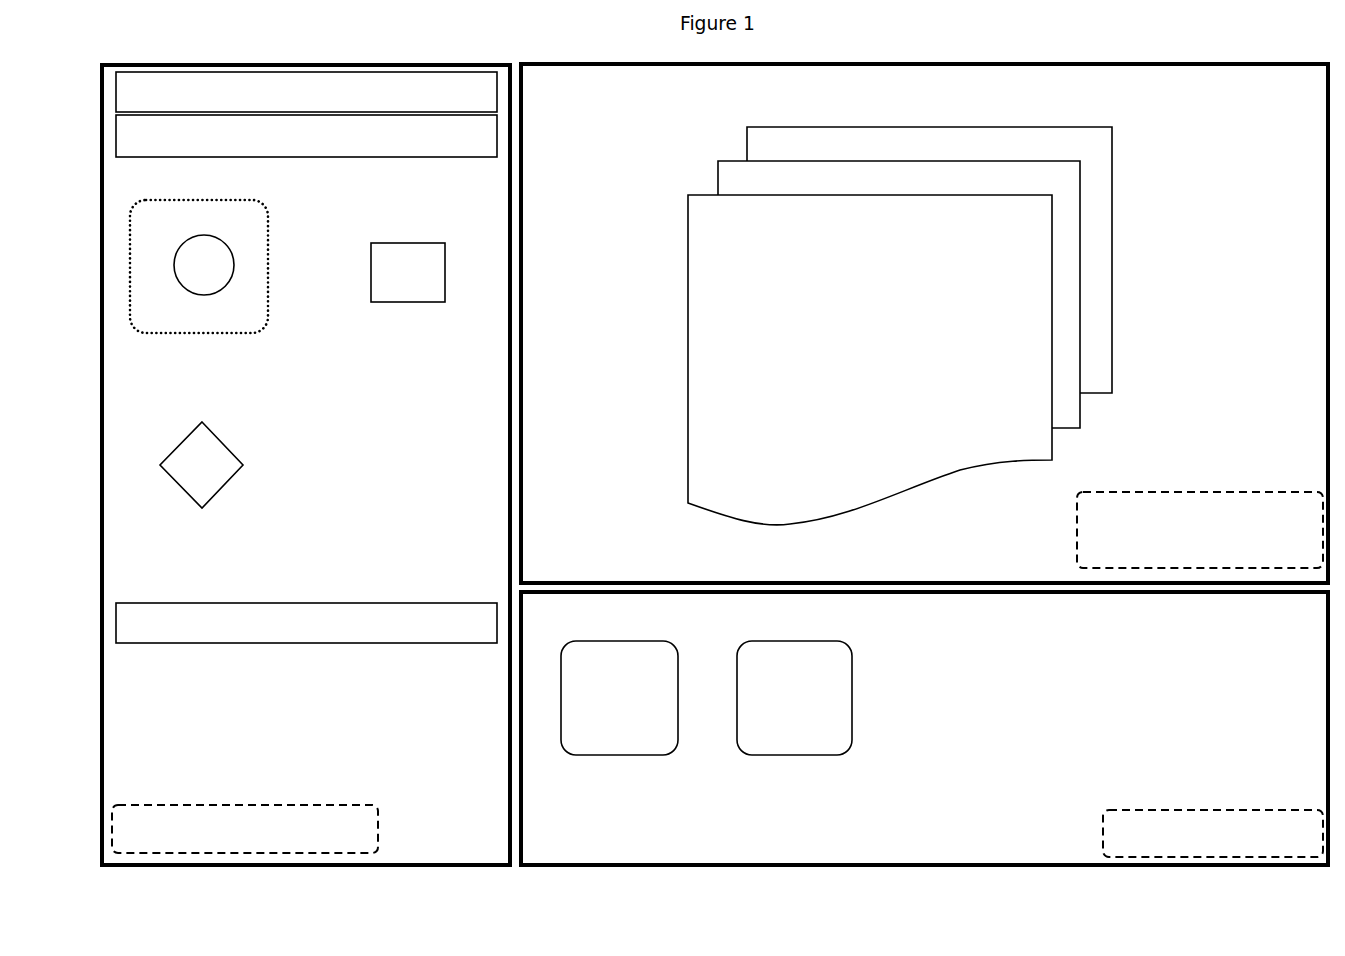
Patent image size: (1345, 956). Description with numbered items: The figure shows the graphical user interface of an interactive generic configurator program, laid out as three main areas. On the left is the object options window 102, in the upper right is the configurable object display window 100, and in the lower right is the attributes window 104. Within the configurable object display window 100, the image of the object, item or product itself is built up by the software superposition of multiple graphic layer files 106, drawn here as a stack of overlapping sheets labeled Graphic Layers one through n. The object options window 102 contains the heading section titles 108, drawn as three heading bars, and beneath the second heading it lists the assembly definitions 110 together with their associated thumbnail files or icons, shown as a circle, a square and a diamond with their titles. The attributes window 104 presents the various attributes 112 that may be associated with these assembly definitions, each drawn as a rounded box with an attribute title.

The configurable object display window 100 is at (924, 323).
The object options window 102 is at (306, 465).
The attributes window 104 is at (924, 728).
The graphic layer files 106 is at (1118, 302).
The heading section titles 108 is at (340, 173).
The assembly definitions 110 is at (266, 345).
The attributes 112 is at (738, 777).